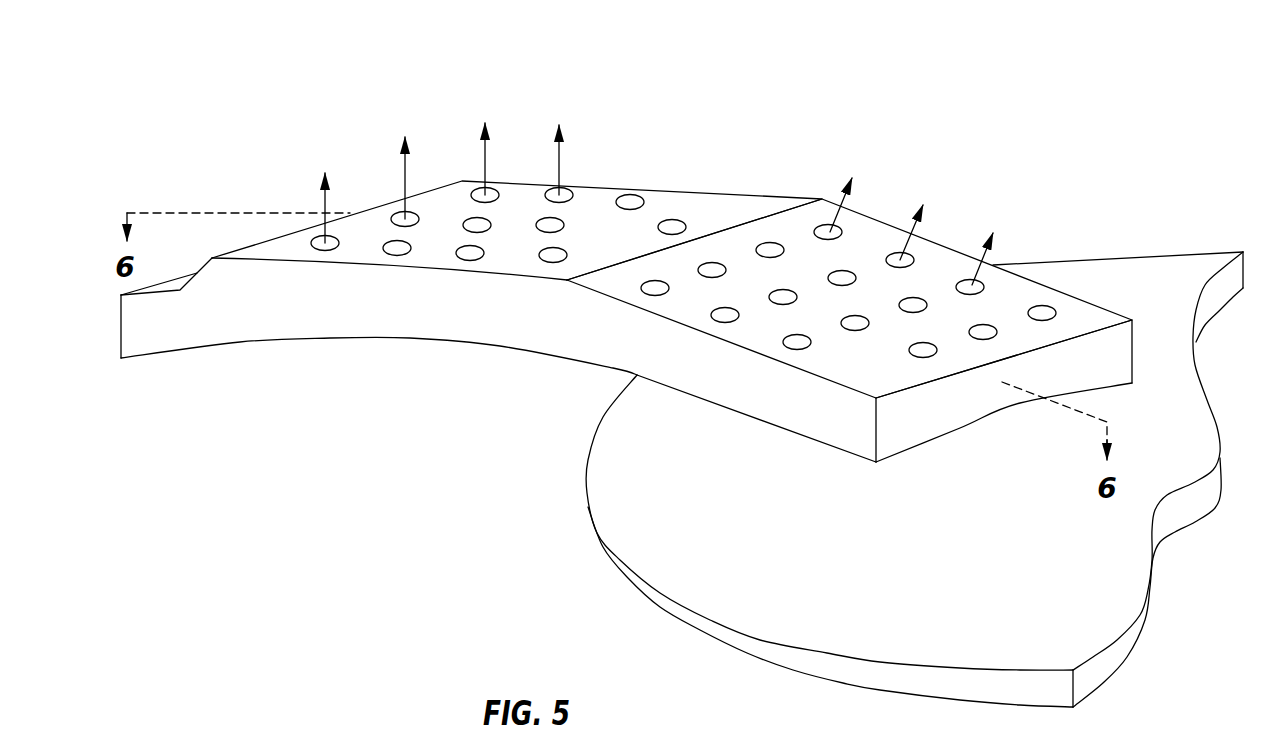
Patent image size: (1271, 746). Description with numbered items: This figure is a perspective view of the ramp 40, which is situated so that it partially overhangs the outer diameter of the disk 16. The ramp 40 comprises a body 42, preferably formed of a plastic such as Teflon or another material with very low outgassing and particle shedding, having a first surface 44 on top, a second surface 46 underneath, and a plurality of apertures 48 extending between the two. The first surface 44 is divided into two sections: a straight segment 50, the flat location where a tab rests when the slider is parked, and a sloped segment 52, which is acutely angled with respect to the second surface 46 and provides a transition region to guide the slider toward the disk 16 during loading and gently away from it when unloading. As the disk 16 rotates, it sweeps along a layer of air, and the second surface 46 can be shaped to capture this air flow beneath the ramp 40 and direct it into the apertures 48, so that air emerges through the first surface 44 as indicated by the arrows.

The disk 16 is at (946, 611).
The ramp 40 is at (354, 74).
The body 42 is at (437, 240).
The first surface 44 is at (863, 304).
The second surface 46 is at (487, 357).
The plurality of apertures 48 is at (553, 226).
The straight segment 50 is at (300, 250).
The sloped segment 52 is at (1067, 328).